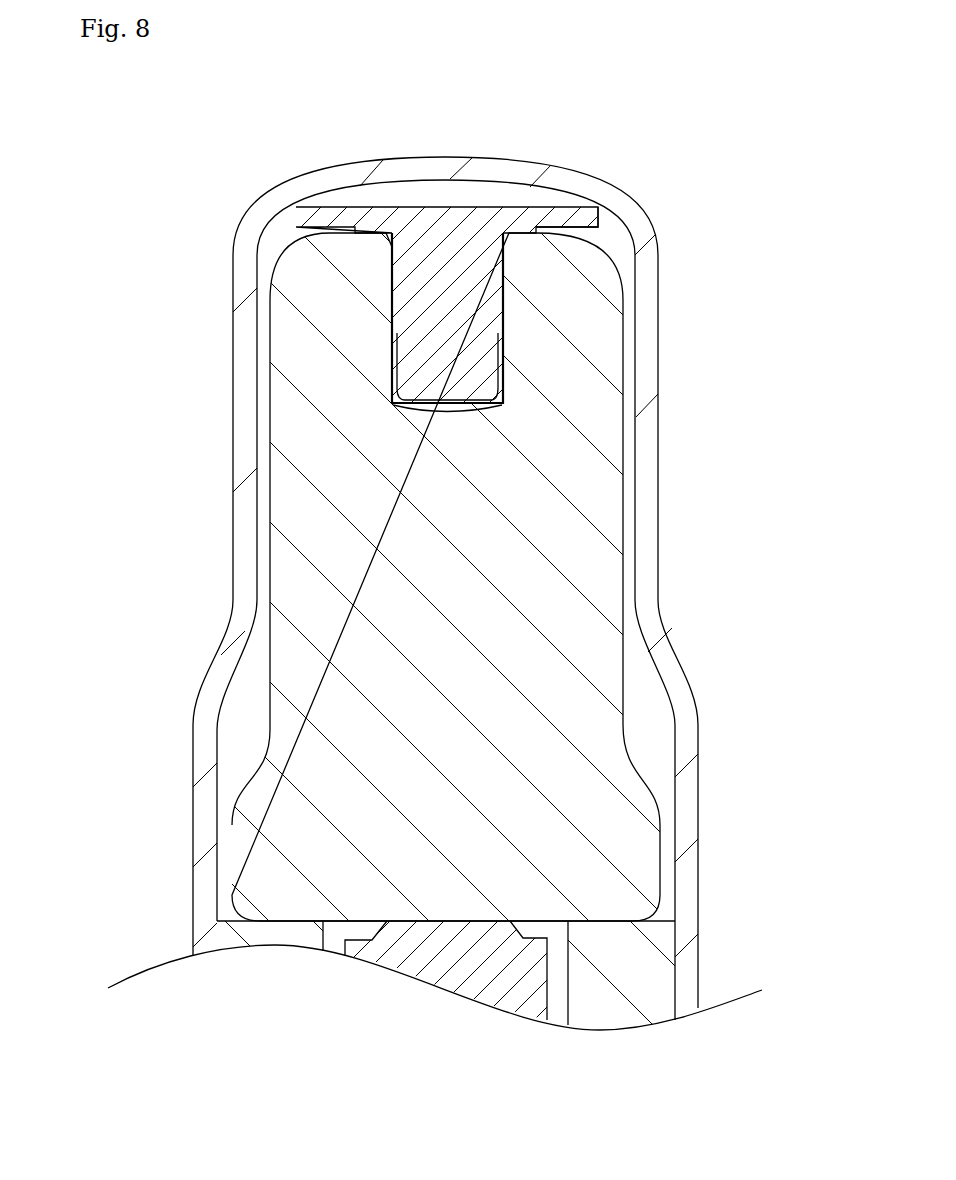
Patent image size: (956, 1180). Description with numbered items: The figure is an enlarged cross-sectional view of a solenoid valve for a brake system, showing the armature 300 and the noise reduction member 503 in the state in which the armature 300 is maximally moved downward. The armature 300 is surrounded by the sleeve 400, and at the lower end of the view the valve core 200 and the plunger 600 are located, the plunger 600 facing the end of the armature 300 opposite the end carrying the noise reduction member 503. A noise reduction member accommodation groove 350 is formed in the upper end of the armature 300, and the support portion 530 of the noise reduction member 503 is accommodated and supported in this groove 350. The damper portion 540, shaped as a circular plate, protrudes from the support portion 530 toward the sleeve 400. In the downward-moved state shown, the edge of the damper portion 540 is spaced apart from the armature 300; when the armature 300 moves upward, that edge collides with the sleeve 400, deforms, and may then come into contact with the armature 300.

The valve core 200 is at (272, 937).
The armature 300 is at (617, 445).
The noise reduction member accommodation groove 350 is at (497, 358).
The sleeve 400 is at (660, 393).
The noise reduction member 503 is at (585, 212).
The support portion 530 is at (435, 322).
The damper portion 540 is at (347, 215).
The plunger 600 is at (452, 987).